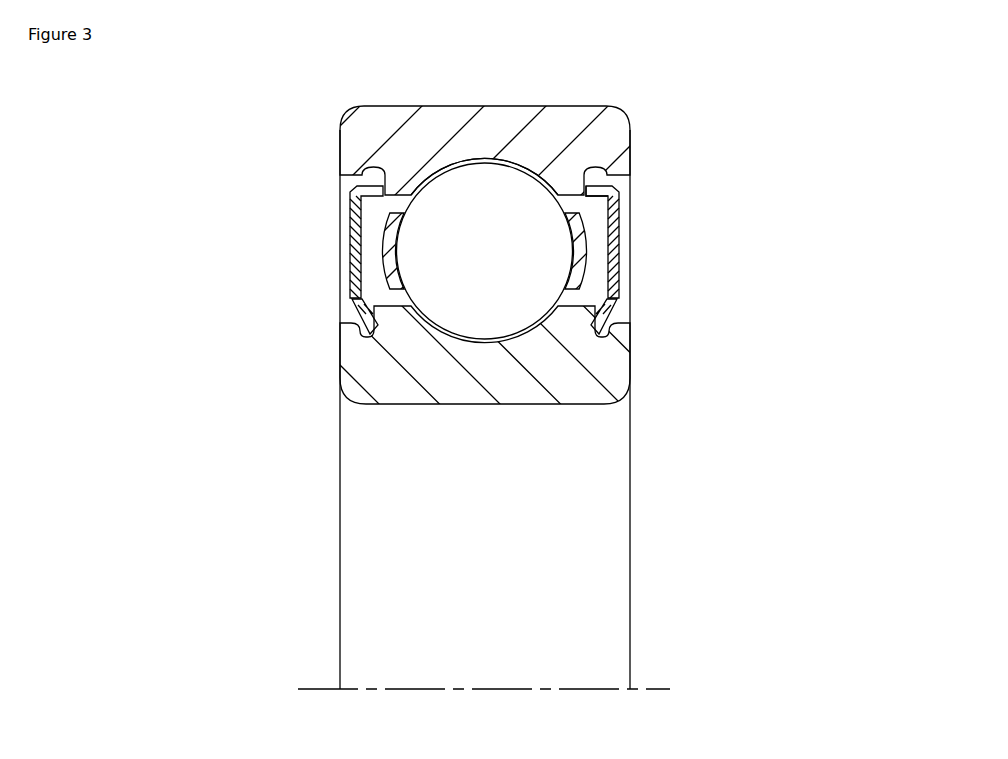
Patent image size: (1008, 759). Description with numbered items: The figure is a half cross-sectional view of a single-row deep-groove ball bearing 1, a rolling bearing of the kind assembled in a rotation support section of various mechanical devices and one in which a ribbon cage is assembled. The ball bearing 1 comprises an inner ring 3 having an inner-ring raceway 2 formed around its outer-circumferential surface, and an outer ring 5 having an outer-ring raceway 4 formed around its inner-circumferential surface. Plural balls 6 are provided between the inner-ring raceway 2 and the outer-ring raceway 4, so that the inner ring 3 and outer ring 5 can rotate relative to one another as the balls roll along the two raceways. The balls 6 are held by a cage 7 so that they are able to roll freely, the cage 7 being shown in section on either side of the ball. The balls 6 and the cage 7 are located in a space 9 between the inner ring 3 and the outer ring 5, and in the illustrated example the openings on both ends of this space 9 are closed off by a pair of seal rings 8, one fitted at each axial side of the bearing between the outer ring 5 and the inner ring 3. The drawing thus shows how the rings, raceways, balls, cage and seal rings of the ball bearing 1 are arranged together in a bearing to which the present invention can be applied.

The ball bearing 1 is at (621, 107).
The inner-ring raceway 2 is at (468, 338).
The inner ring 3 is at (580, 391).
The outer-ring raceway 4 is at (477, 163).
The outer ring 5 is at (559, 126).
The balls 6 is at (560, 262).
The cage 7 is at (386, 258).
The seal rings 8 is at (350, 199).
The space 9 is at (590, 205).